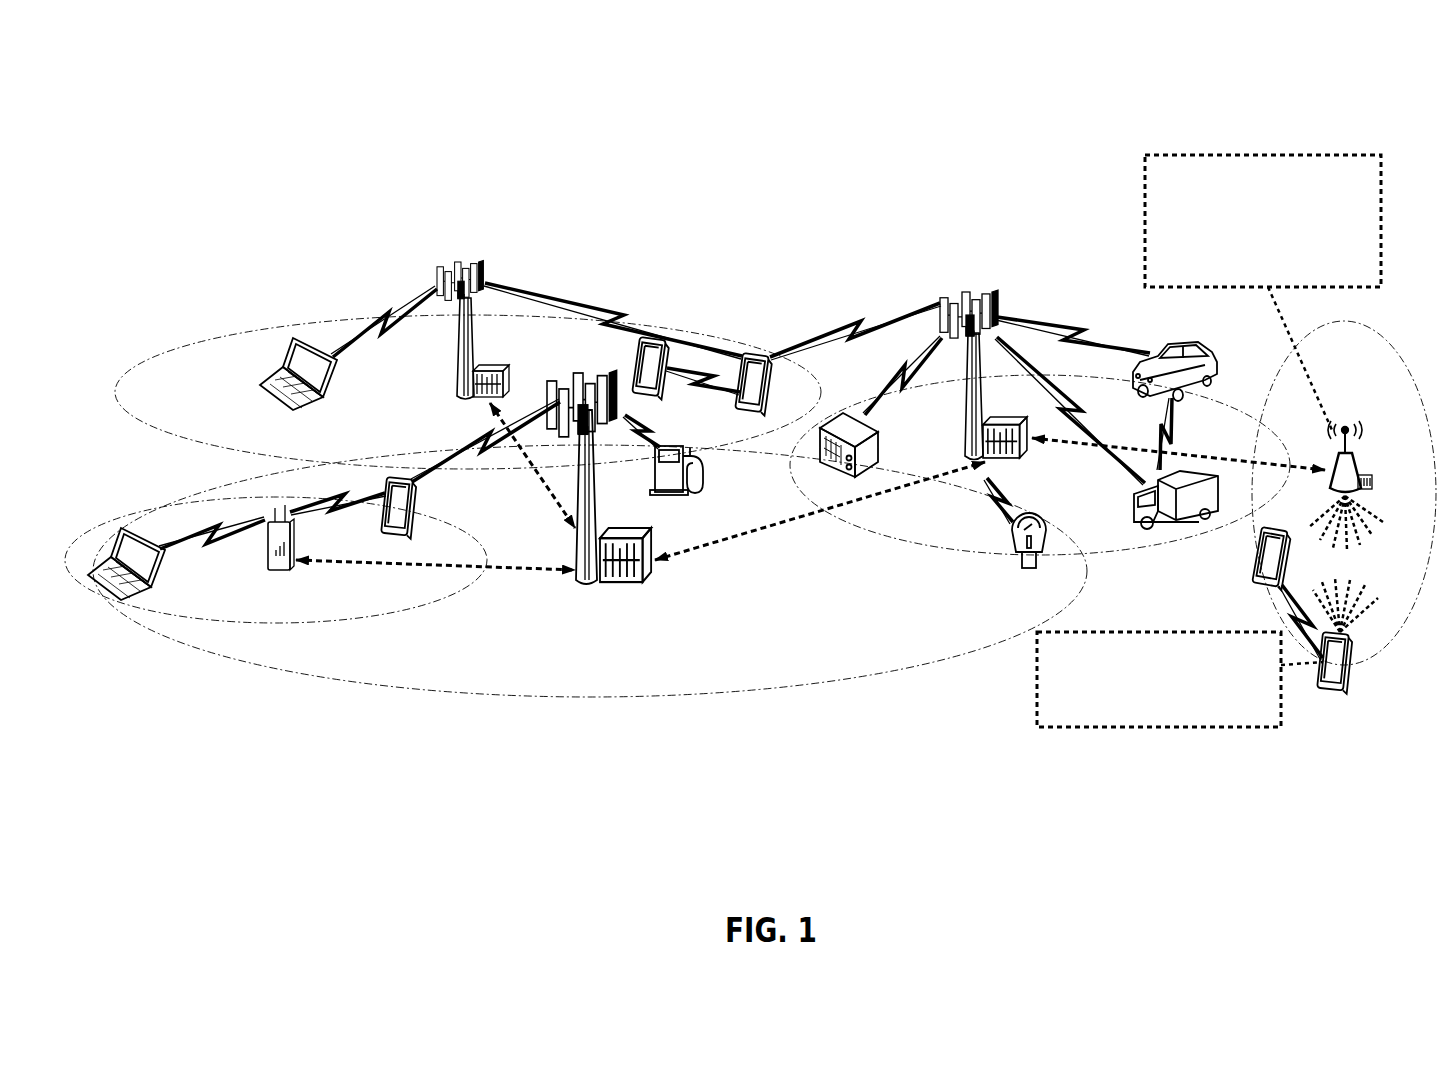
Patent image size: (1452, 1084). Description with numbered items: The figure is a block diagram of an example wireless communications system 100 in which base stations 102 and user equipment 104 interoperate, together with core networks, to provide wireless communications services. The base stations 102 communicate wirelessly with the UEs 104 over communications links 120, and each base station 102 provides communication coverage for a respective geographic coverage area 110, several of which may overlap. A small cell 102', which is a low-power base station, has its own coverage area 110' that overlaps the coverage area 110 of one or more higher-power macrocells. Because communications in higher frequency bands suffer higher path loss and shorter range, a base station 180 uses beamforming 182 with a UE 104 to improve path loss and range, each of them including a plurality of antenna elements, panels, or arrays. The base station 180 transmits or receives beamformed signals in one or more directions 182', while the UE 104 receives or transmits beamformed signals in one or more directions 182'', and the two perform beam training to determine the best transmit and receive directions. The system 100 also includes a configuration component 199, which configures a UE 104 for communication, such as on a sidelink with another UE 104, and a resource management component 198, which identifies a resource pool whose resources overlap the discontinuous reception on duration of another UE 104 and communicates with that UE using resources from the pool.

The wireless communications system 100 is at (119, 104).
The base station 102 is at (804, 441).
The small cell 102' is at (273, 549).
The user equipment 104 is at (305, 402).
The geographic coverage area 110 is at (750, 499).
The coverage area 110' is at (276, 579).
The communications link 120 is at (376, 305).
The base station 180 is at (1348, 408).
The beamforming 182 is at (1368, 570).
The transmit directions 182' is at (1368, 523).
The receive directions 182'' is at (1357, 611).
The resource management component 198 is at (1163, 632).
The configuration component 199 is at (1265, 153).